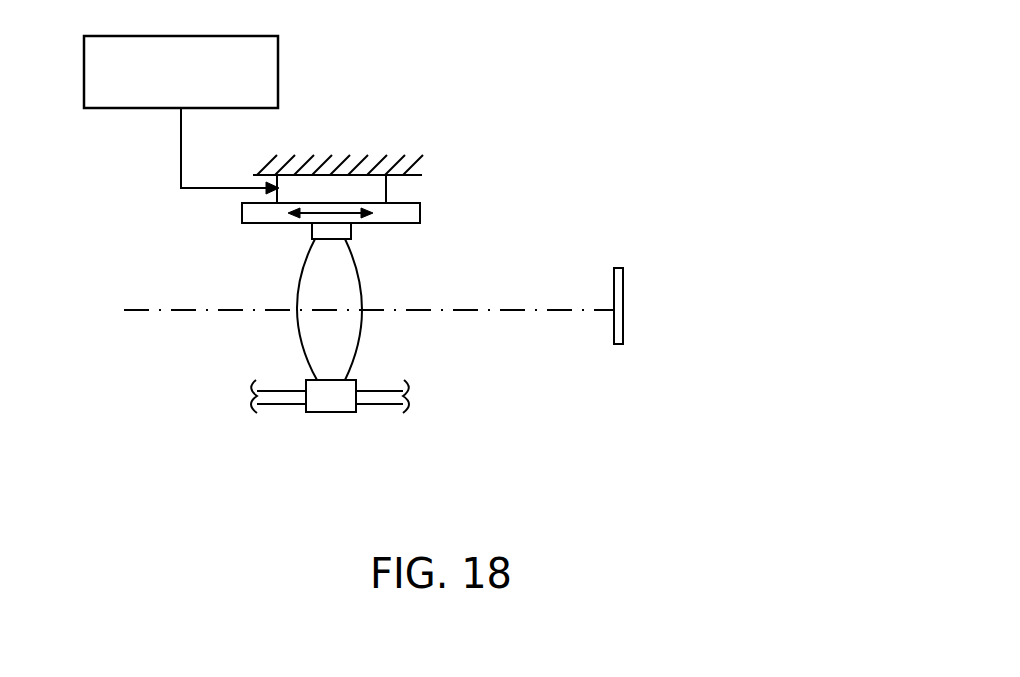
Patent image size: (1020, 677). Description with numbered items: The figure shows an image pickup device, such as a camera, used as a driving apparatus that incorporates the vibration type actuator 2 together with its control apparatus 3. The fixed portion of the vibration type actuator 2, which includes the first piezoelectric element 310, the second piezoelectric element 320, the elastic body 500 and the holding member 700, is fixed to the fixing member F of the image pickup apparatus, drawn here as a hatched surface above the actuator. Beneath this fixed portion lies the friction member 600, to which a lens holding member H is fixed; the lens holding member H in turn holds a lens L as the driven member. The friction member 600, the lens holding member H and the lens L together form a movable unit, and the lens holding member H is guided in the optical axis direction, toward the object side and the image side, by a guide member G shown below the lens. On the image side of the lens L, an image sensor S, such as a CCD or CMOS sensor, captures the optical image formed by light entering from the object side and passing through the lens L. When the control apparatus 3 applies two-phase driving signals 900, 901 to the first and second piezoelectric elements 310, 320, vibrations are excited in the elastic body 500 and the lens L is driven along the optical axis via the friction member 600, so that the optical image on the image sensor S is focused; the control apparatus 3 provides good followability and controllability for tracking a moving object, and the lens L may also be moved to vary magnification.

The control apparatus 3 is at (278, 75).
The driving signal 900 is at (240, 151).
The driving signal 901 is at (181, 131).
The fixing member F is at (337, 160).
The first piezoelectric element 310 is at (466, 176).
The second piezoelectric element 320 is at (466, 176).
The elastic body 500 is at (466, 176).
The holding member 700 is at (368, 190).
The friction member 600 is at (405, 215).
The vibration type actuator 2 is at (480, 179).
The lens holding member H is at (351, 228).
The lens L is at (314, 288).
The image sensor S is at (623, 328).
The guide member G is at (378, 405).